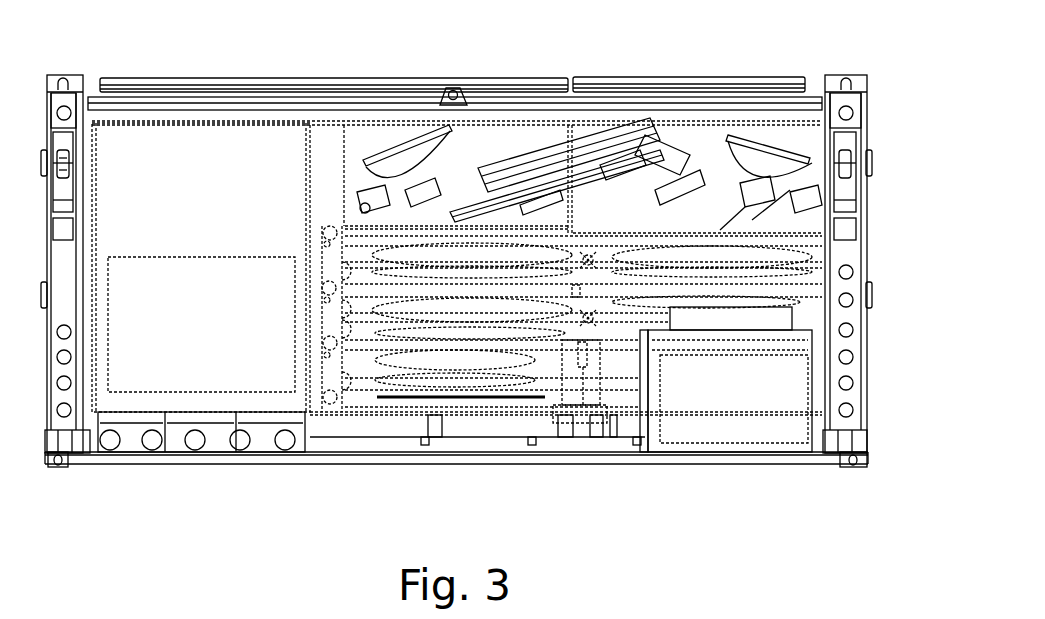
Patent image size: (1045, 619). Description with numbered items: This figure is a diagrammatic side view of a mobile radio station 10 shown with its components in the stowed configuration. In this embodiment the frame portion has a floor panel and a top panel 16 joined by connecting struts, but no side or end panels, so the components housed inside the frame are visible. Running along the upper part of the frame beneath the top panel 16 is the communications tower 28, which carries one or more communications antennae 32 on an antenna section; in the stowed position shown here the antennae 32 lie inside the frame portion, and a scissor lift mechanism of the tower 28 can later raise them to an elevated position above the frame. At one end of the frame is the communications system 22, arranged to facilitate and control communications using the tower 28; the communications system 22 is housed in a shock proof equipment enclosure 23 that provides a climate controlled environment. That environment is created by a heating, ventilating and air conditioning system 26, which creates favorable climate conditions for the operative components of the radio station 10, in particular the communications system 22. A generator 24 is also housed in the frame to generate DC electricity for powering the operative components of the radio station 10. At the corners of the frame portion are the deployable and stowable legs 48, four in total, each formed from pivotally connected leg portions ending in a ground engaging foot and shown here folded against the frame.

The mobile radio station 10 is at (551, 62).
The top panel 16 is at (407, 158).
The communications system 22 is at (137, 387).
The shock proof equipment enclosure 23 is at (203, 403).
The generator 24 is at (748, 435).
The heating, ventilating and air conditioning system 26 is at (483, 428).
The communications tower 28 is at (778, 256).
The communications antennae 32 is at (607, 137).
The deployable and stowable legs 48 is at (843, 342).